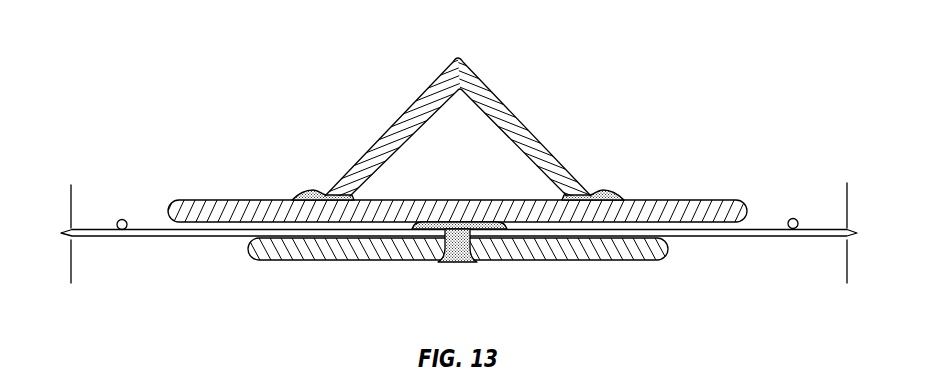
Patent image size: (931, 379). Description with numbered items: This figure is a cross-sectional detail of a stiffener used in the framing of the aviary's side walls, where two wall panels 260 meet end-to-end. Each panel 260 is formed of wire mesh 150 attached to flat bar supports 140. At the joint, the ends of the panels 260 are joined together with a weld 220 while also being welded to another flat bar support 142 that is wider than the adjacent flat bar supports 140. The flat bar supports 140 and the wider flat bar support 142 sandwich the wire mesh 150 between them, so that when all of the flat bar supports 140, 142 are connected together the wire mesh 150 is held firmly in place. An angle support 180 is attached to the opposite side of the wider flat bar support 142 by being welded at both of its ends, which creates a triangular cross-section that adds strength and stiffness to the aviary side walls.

The flat bar support 140 is at (300, 261).
The wider flat bar support 142 is at (655, 200).
The wire mesh 150 is at (160, 236).
The angle support 180 is at (498, 97).
The weld 220 is at (314, 189).
The panel 260 is at (395, 106).